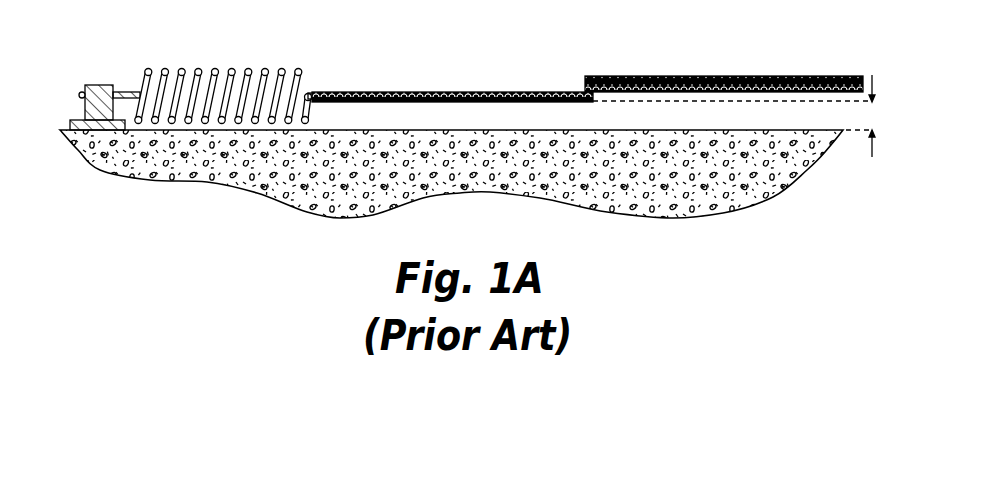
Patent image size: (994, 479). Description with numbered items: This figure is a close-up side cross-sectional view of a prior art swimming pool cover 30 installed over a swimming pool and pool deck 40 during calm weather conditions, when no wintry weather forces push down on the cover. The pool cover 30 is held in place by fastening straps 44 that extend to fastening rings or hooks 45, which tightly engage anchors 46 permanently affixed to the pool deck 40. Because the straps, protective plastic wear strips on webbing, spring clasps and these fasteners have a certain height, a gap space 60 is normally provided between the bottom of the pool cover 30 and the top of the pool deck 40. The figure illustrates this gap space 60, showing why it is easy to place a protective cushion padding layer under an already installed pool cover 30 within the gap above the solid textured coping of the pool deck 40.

The pool cover 30 is at (692, 77).
The pool deck 40 is at (762, 53).
The fastening straps 44 is at (453, 92).
The fastening rings or hooks 45 is at (257, 37).
The anchors 46 is at (79, 93).
The gap space 60 is at (913, 103).